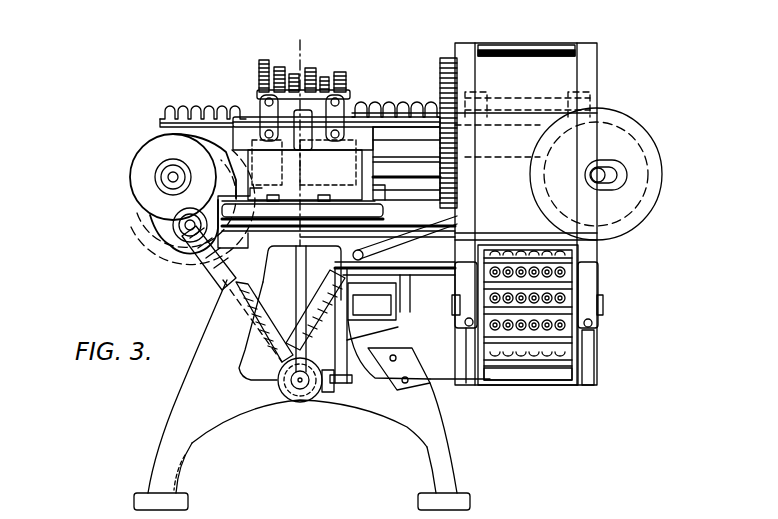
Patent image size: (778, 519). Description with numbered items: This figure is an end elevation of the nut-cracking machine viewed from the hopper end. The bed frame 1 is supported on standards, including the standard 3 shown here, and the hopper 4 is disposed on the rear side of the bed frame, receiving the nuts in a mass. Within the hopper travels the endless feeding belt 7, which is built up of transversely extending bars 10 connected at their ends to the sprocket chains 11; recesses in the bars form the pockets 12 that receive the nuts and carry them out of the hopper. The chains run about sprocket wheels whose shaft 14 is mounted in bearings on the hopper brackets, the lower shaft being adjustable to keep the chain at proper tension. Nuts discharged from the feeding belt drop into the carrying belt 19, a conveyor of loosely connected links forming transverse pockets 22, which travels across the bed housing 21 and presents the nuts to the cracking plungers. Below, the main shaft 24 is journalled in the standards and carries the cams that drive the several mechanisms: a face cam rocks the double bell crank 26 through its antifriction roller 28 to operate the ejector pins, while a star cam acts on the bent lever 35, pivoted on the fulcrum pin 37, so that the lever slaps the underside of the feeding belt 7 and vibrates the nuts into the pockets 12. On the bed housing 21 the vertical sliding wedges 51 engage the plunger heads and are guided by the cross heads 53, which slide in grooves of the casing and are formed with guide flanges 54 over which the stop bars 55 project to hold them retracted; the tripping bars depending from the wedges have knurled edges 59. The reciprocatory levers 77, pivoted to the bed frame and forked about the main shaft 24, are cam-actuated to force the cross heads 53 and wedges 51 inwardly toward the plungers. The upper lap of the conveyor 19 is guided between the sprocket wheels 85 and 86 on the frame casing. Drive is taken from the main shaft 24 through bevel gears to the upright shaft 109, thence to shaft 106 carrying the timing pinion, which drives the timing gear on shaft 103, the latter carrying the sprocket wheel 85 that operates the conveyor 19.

The bed frame 1 is at (218, 210).
The standard 3 is at (186, 446).
The hopper 4 is at (598, 86).
The endless feeding belt 7 is at (582, 340).
The bars 10 is at (516, 372).
The sprocket chains 11 is at (456, 298).
The pockets 12 is at (560, 288).
The shaft 14 is at (508, 96).
The carrying belt 19 is at (164, 119).
The bed housing 21 is at (366, 150).
The transverse pockets 22 is at (404, 112).
The main shaft 24 is at (300, 392).
The double bell crank 26 is at (396, 316).
The antifriction roller 28 is at (322, 396).
The bent lever 35 is at (426, 240).
The fulcrum pin 37 is at (352, 252).
The sliding wedges 51 is at (338, 72).
The cross heads 53 is at (350, 122).
The guide flanges 54 is at (375, 117).
The stop bars 55 is at (252, 118).
The knurled edges 59 is at (268, 70).
The reciprocatory levers 77 is at (290, 262).
The sprocket wheel 85 is at (130, 172).
The sprocket wheel 86 is at (638, 153).
The shaft 103 is at (166, 183).
The shaft 106 is at (184, 232).
The upright shaft 109 is at (226, 282).